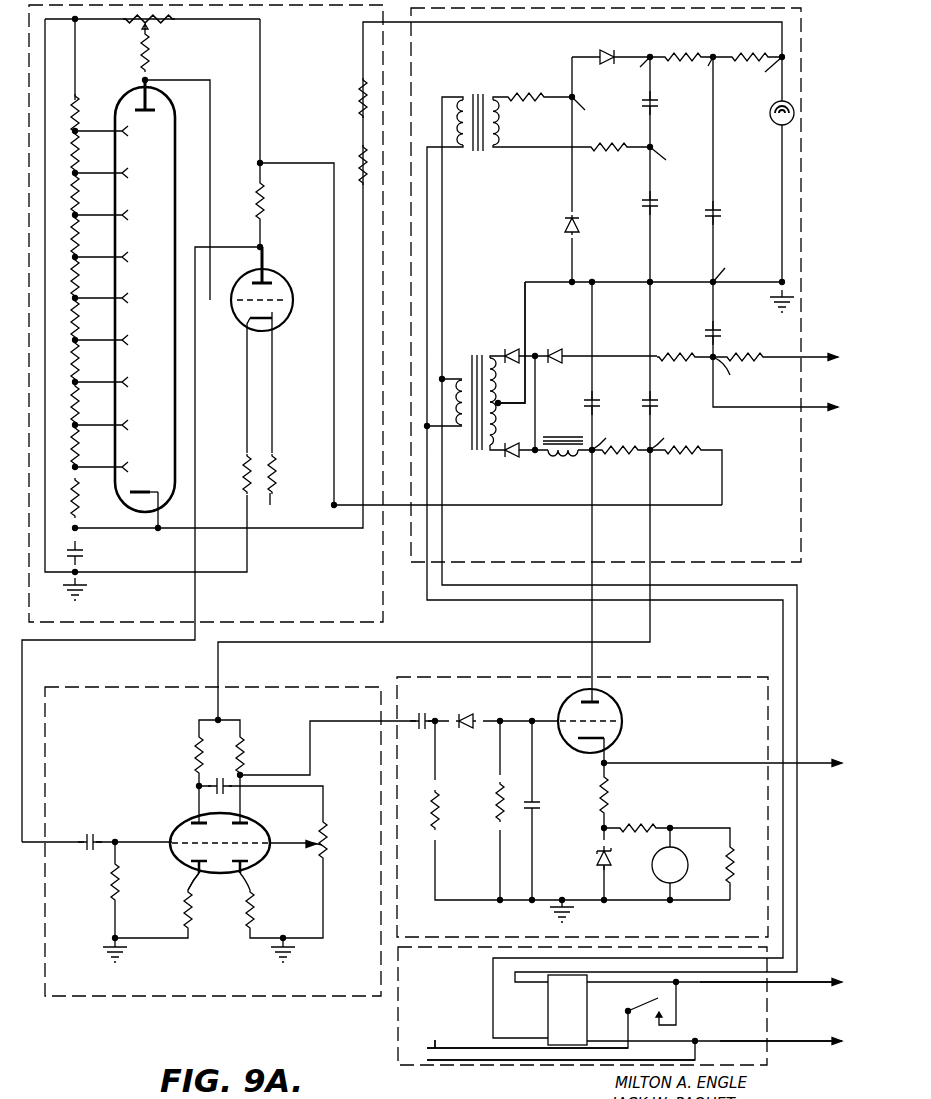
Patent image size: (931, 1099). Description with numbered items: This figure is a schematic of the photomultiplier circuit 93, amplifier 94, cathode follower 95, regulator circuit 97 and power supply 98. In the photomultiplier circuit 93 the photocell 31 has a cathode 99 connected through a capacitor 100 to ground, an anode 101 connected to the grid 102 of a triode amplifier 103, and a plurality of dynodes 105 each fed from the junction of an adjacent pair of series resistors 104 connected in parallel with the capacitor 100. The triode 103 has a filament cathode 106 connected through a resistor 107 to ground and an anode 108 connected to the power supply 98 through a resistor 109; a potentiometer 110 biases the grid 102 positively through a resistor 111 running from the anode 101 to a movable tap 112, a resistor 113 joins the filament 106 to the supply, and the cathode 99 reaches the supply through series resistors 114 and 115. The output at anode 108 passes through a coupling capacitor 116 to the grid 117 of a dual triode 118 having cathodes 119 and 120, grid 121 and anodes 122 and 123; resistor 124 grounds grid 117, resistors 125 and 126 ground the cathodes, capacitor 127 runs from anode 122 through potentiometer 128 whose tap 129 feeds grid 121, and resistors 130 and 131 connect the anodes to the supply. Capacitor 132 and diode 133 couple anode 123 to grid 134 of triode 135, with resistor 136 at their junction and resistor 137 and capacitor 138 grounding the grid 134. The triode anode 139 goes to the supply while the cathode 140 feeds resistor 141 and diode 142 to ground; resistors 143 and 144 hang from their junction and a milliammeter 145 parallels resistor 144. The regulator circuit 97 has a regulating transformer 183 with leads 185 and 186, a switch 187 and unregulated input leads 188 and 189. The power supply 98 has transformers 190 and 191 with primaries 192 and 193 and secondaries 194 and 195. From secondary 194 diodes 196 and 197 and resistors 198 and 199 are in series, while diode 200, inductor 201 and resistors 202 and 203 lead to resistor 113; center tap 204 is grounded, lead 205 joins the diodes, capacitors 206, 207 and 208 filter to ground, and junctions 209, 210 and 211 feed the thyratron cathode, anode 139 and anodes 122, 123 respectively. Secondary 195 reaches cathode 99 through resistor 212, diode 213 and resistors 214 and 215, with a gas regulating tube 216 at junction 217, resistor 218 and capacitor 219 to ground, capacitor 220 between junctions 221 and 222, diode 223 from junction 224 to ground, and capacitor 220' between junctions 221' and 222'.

The photocell 31 is at (120, 96).
The photomultiplier circuit 93 is at (206, 313).
The amplifier 94 is at (213, 841).
The cathode follower 95 is at (582, 809).
The regulator circuit 97 is at (395, 1042).
The power supply 98 is at (606, 285).
The cathode 99 is at (150, 489).
The capacitor 100 is at (82, 552).
The anode 101 is at (150, 112).
The grid 102 is at (284, 313).
The triode amplifier 103 is at (283, 267).
The resistors 104 is at (77, 492).
The dynodes 105 is at (136, 479).
The filament cathode 106 is at (232, 333).
The resistor 107 is at (242, 478).
The anode 108 is at (245, 280).
The resistor 109 is at (265, 200).
The potentiometer 110 is at (163, 24).
The resistor 111 is at (150, 62).
The movable tap 112 is at (140, 29).
The resistor 113 is at (278, 470).
The resistor 114 is at (358, 162).
The resistor 115 is at (358, 96).
The coupling capacitor 116 is at (96, 833).
The grid 117 is at (186, 838).
The dual triode 118 is at (275, 830).
The cathode 119 is at (196, 884).
The cathode 120 is at (209, 868).
The grid 121 is at (250, 862).
The anode 122 is at (205, 820).
The anode 123 is at (246, 820).
The resistor 124 is at (112, 878).
The resistor 125 is at (182, 905).
The resistor 126 is at (246, 920).
The capacitor 127 is at (235, 764).
The potentiometer 128 is at (328, 835).
The movable tap 129 is at (316, 853).
The resistor 130 is at (193, 755).
The resistor 131 is at (245, 752).
The capacitor 132 is at (428, 713).
The diode 133 is at (470, 712).
The grid 134 is at (610, 719).
The triode 135 is at (628, 706).
The resistor 136 is at (432, 822).
The resistor 137 is at (498, 805).
The capacitor 138 is at (538, 812).
The anode 139 is at (600, 697).
The cathode 140 is at (585, 742).
The resistor 141 is at (610, 805).
The diode 142 is at (596, 865).
The resistor 143 is at (648, 824).
The resistor 144 is at (735, 858).
The milliammeter 145 is at (688, 866).
The regulating transformer 183 is at (546, 1020).
The input lead 185 is at (800, 983).
The input lead 186 is at (782, 1042).
The switch 187 is at (668, 1006).
The input lead 188 is at (437, 1040).
The input lead 189 is at (455, 1058).
The transformer 190 is at (475, 455).
The transformer 191 is at (484, 153).
The primary winding 192 is at (460, 384).
The primary winding 193 is at (460, 103).
The secondary winding 194 is at (496, 370).
The secondary winding 195 is at (500, 118).
The diode 196 is at (508, 348).
The diode 197 is at (550, 352).
The resistor 198 is at (683, 350).
The resistor 199 is at (745, 350).
The diode 200 is at (512, 457).
The inductor 201 is at (563, 457).
The resistor 202 is at (620, 457).
The resistor 203 is at (683, 457).
The center tap 204 is at (498, 408).
The lead 205 is at (527, 387).
The capacitor 206 is at (598, 395).
The capacitor 207 is at (656, 395).
The capacitor 208 is at (718, 325).
The junction 209 is at (736, 372).
The junction 210 is at (612, 437).
The junction 211 is at (671, 437).
The resistor 212 is at (523, 90).
The diode 213 is at (608, 50).
The resistor 214 is at (700, 52).
The resistor 215 is at (738, 52).
The gas regulating tube 216 is at (772, 122).
The junction 217 is at (760, 75).
The resistor 218 is at (609, 152).
The capacitor 219 is at (657, 199).
The capacitor 220 is at (669, 113).
The capacitor 220' is at (734, 205).
The junction 221 is at (629, 71).
The junction 221' is at (689, 71).
The junction 222 is at (673, 160).
The junction 222' is at (733, 267).
The diode 223 is at (562, 228).
The junction 224 is at (593, 112).